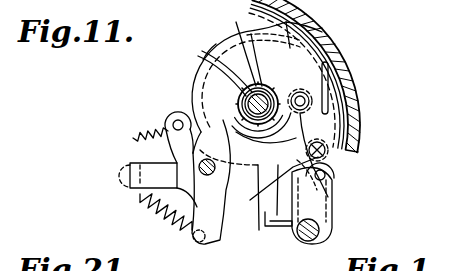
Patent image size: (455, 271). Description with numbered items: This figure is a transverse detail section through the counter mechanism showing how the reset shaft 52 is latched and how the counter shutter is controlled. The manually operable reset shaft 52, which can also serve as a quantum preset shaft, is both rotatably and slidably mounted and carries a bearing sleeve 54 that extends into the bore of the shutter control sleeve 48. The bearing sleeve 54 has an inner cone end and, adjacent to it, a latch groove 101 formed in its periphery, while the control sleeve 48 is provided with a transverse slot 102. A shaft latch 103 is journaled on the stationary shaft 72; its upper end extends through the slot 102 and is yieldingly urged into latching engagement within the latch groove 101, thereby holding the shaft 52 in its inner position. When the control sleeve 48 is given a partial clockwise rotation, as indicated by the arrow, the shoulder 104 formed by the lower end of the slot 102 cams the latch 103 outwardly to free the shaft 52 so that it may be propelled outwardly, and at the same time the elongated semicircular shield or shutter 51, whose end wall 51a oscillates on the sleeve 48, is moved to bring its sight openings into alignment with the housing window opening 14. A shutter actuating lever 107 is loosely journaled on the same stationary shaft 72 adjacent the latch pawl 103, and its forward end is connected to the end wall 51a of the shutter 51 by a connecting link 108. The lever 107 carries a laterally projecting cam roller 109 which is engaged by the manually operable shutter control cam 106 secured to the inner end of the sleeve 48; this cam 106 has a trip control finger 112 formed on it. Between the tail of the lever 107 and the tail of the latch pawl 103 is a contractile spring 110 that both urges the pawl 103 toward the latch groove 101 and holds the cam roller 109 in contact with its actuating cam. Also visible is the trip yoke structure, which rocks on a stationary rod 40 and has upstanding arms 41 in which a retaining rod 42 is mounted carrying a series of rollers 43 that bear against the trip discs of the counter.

The window opening 14 is at (331, 62).
The stationary rod 40 is at (320, 230).
The upstanding arms 41 is at (334, 204).
The retaining rod 42 is at (325, 174).
The rollers 43 is at (336, 178).
The shutter control sleeve 48 is at (334, 52).
The shutter 51 is at (300, 30).
The end wall 51a is at (312, 90).
The reset shaft 52 is at (262, 96).
The bearing sleeve 54 is at (230, 76).
The stationary shaft 72 is at (196, 212).
The latch groove 101 is at (302, 50).
The transverse slot 102 is at (240, 28).
The shaft latch 103 is at (208, 88).
The shoulder 104 is at (236, 112).
The shutter control cam 106 is at (212, 56).
The shutter actuating lever 107 is at (230, 213).
The connecting link 108 is at (300, 114).
The cam roller 109 is at (280, 228).
The contractile spring 110 is at (150, 198).
The trip control finger 112 is at (322, 150).